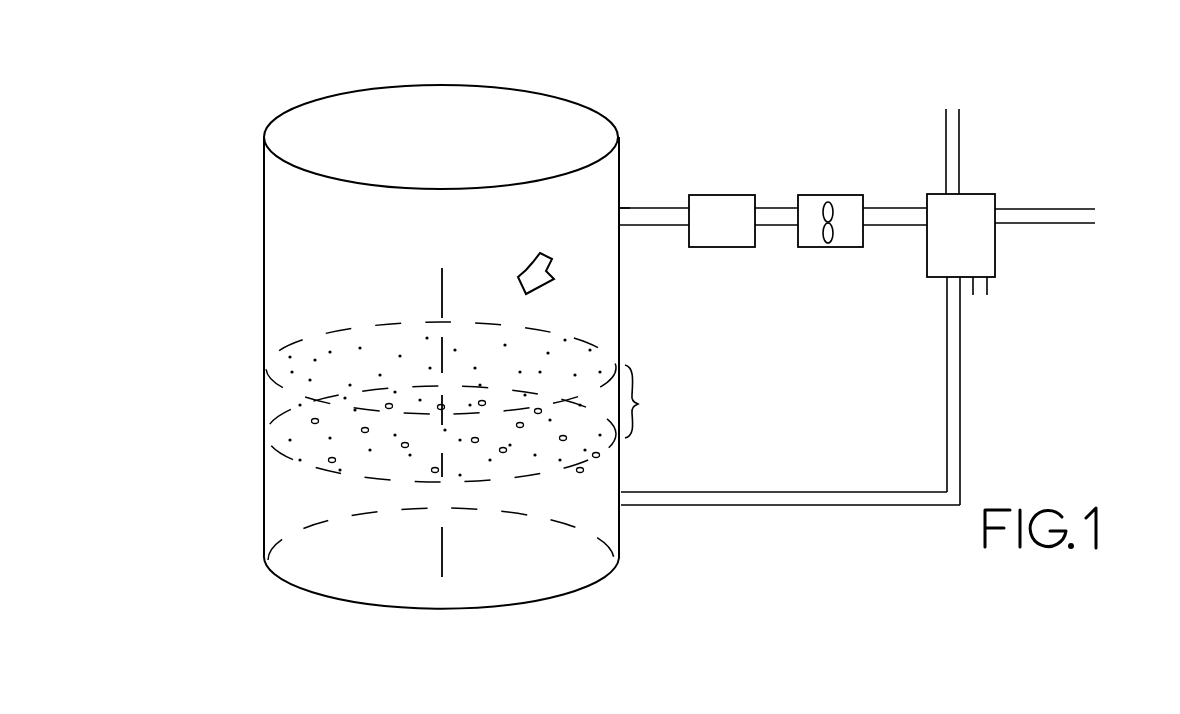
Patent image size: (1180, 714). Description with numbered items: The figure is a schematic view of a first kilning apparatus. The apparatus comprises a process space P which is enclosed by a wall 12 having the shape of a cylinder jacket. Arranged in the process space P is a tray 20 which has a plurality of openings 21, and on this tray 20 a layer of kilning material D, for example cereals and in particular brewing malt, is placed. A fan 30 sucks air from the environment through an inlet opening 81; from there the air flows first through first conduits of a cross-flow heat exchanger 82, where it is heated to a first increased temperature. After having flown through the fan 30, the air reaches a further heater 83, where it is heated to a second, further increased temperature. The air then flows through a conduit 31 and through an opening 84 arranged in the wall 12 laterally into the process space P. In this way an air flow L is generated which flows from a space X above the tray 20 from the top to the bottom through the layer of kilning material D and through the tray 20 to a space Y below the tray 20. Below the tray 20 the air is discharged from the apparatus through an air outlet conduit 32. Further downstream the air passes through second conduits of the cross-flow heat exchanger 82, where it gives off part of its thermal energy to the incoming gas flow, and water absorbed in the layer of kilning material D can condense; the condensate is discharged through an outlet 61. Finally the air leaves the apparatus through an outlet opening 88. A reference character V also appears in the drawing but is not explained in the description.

The wall 12 is at (265, 203).
The tray 20 is at (304, 463).
The openings 21 is at (335, 433).
The fan 30 is at (832, 196).
The conduit 31 is at (636, 228).
The air outlet conduit 32 is at (637, 508).
The outlet 61 is at (988, 288).
The inlet opening 81 is at (1095, 216).
The cross-flow heat exchanger 82 is at (965, 193).
The further heater 83 is at (712, 196).
The opening 84 is at (636, 210).
The outlet opening 88 is at (953, 113).
The process space P is at (288, 270).
The space above the tray X is at (420, 254).
The space below the tray Y is at (582, 507).
The volume V is at (465, 572).
The air flow L is at (528, 250).
The layer of kilning material D is at (646, 401).